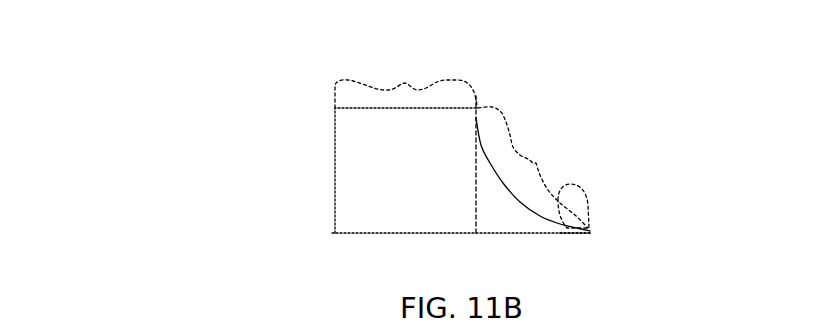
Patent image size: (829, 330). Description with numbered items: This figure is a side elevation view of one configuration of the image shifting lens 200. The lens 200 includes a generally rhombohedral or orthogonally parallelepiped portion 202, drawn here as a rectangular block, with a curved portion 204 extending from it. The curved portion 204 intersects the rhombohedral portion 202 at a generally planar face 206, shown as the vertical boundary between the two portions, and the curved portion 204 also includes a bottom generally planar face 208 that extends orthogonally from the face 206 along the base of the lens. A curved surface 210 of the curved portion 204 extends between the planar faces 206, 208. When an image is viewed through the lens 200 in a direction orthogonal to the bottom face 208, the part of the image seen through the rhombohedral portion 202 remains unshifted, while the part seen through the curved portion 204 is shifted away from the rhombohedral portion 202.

The image shifting lens 200 is at (301, 162).
The rhombohedral portion 202 is at (406, 80).
The curved portion 204 is at (535, 162).
The planar face 206 is at (473, 208).
The bottom planar face 208 is at (589, 233).
The curved surface 210 is at (572, 185).